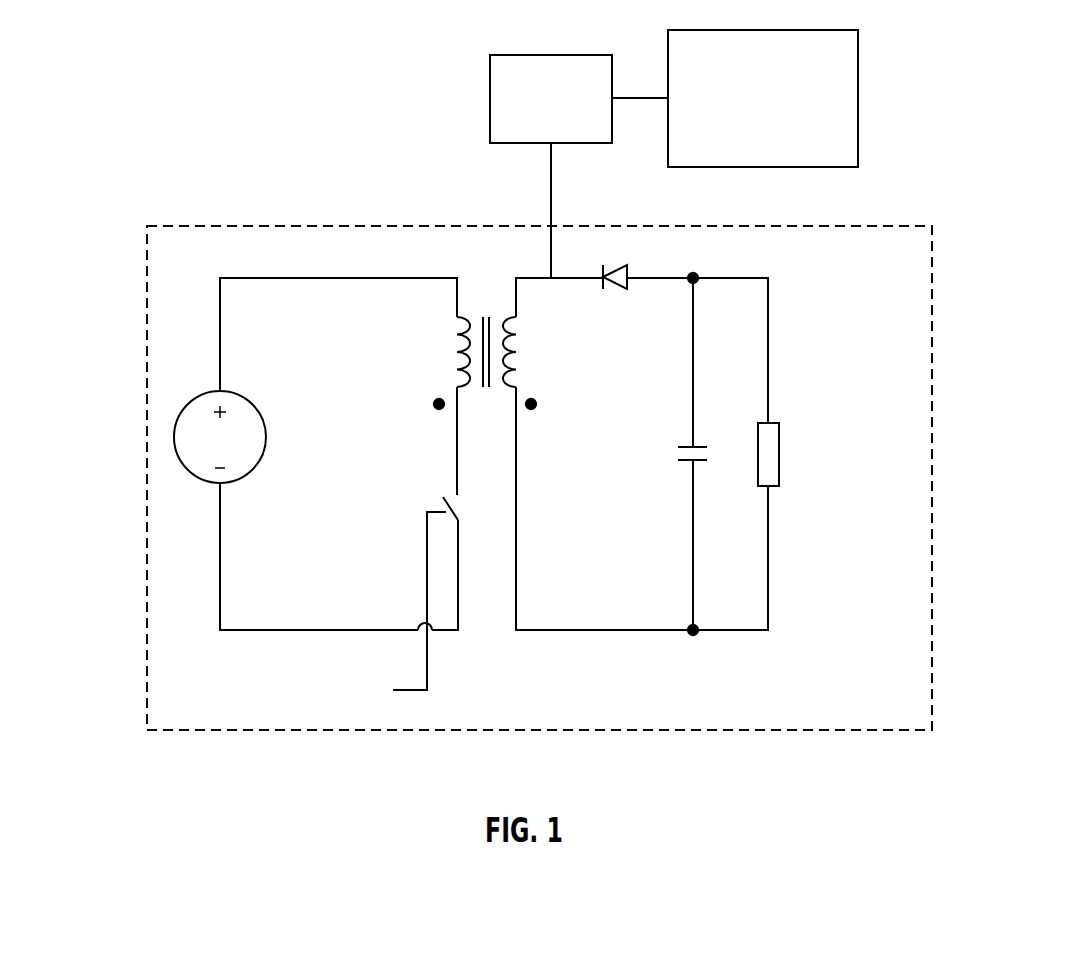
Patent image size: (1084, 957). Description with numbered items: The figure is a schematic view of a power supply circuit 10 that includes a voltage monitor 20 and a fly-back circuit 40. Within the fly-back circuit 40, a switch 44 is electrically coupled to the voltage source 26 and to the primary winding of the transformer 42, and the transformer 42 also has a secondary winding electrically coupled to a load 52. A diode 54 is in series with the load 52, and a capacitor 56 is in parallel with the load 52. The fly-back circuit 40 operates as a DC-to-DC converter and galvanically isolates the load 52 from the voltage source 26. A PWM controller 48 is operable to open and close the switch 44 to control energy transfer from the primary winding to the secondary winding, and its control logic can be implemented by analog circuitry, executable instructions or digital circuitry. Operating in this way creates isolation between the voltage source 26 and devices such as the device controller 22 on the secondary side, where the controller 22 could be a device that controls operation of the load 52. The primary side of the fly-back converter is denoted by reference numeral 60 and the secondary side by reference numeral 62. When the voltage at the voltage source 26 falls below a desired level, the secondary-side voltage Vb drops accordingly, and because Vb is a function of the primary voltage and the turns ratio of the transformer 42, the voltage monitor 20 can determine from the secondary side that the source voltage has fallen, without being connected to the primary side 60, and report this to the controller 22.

The power supply circuit 10 is at (136, 114).
The voltage monitor 20 is at (520, 55).
The controller 22 is at (693, 30).
The voltage source 26 is at (205, 393).
The fly-back circuit 40 is at (452, 226).
The transformer 42 is at (483, 299).
The switch 44 is at (450, 517).
The controller 48 is at (288, 671).
The load 52 is at (780, 452).
The diode 54 is at (621, 267).
The capacitor 56 is at (693, 505).
The primary side 60 is at (310, 255).
The secondary side 62 is at (571, 640).